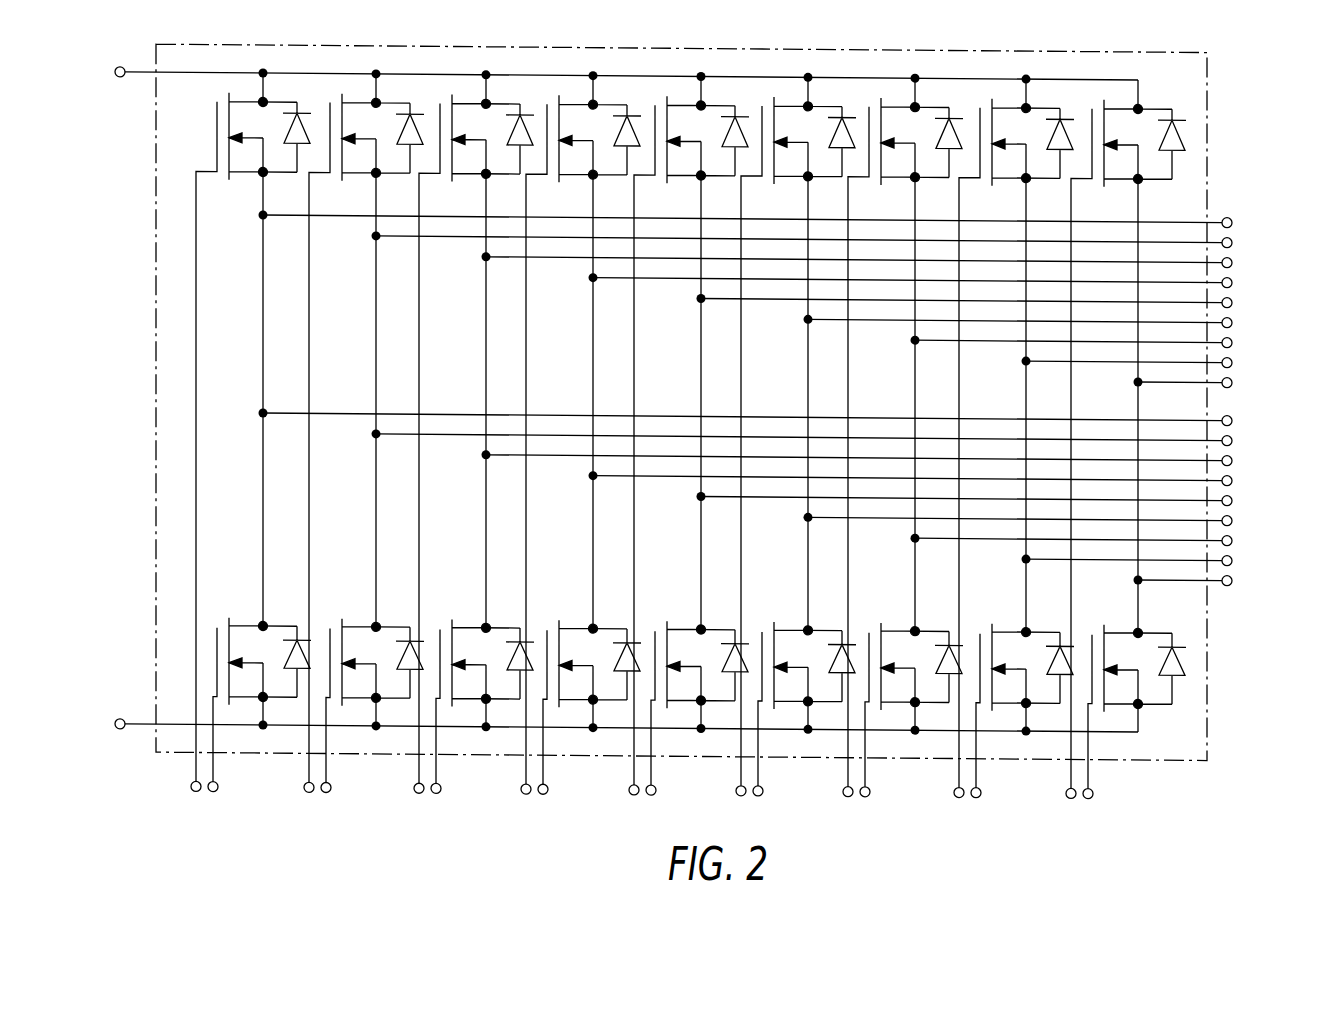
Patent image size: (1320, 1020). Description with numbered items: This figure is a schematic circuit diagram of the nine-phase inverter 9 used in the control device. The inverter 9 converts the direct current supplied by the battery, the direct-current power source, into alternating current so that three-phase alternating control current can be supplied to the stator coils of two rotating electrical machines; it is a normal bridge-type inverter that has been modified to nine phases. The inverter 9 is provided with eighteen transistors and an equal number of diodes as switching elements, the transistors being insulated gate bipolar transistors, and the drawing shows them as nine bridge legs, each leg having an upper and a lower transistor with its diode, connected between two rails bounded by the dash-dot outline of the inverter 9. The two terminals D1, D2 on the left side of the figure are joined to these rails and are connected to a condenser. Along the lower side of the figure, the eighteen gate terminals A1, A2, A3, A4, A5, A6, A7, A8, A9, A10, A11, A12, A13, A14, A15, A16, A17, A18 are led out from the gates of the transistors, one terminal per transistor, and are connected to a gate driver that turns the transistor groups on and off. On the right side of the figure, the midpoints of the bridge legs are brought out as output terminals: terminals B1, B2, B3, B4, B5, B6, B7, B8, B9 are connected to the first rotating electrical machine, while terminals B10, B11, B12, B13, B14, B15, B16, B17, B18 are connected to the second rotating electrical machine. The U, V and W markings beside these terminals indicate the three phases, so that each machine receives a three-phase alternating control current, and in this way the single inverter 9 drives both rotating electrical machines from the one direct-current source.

The nine-phase inverter 9 is at (1182, 728).
The terminal D1 is at (614, 77).
The terminal D2 is at (614, 729).
The terminal A1 is at (189, 800).
The terminal A2 is at (223, 801).
The terminal A3 is at (302, 801).
The terminal A4 is at (336, 801).
The terminal A5 is at (412, 802).
The terminal A6 is at (446, 802).
The terminal A7 is at (518, 803).
The terminal A8 is at (553, 803).
The terminal A9 is at (626, 804).
The terminal A10 is at (664, 804).
The terminal A11 is at (730, 805).
The terminal A12 is at (771, 805).
The terminal A13 is at (837, 805).
The terminal A14 is at (878, 806).
The terminal A15 is at (948, 806).
The terminal A16 is at (989, 807).
The terminal A17 is at (1060, 807).
The terminal A18 is at (1101, 808).
The terminal B1 is at (775, 220).
The terminal B2 is at (832, 239).
The terminal B3 is at (889, 260).
The terminal B4 is at (940, 281).
The terminal B5 is at (994, 301).
The terminal B6 is at (1050, 322).
The terminal B7 is at (1101, 342).
The terminal B8 is at (1157, 363).
The terminal B9 is at (1215, 383).
The terminal B10 is at (780, 418).
The terminal B11 is at (836, 437).
The terminal B12 is at (891, 458).
The terminal B13 is at (945, 479).
The terminal B14 is at (999, 499).
The terminal B15 is at (1052, 520).
The terminal B16 is at (1108, 540).
The terminal B17 is at (1163, 561).
The terminal B18 is at (1219, 581).